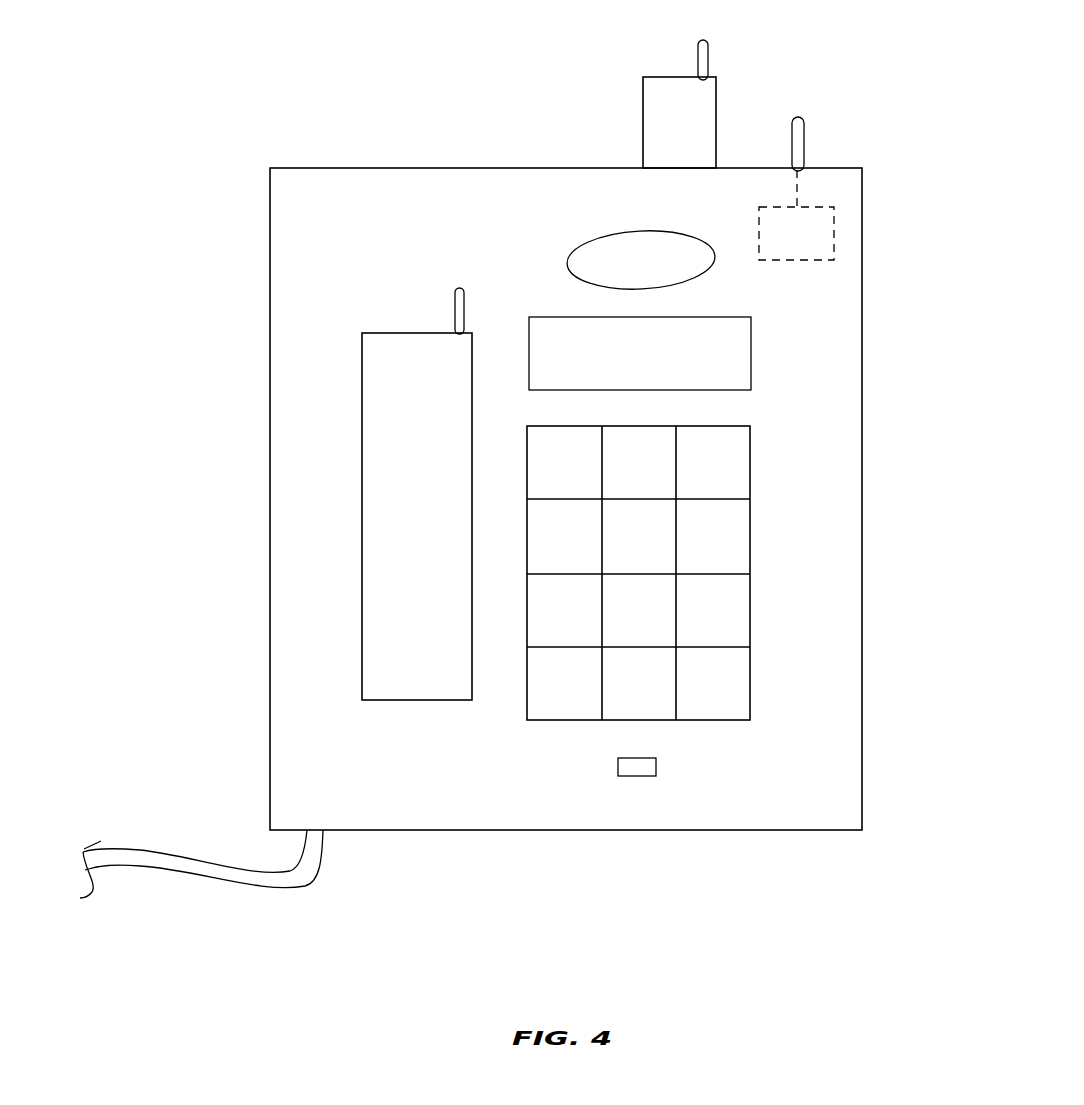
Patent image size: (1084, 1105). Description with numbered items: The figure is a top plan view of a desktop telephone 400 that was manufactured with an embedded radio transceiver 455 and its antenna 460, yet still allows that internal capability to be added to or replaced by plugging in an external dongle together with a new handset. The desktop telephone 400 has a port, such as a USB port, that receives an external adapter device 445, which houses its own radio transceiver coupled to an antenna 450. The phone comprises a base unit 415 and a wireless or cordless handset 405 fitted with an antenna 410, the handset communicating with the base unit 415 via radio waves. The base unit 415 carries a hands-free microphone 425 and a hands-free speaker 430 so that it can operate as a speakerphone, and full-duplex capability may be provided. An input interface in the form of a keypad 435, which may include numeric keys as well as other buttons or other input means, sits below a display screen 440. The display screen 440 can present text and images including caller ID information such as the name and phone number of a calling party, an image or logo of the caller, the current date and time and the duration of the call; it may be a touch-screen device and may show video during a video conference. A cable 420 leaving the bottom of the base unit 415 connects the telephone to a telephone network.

The desktop telephone 400 is at (864, 182).
The cordless handset 405 is at (362, 518).
The handset antenna 410 is at (454, 316).
The base unit 415 is at (270, 498).
The cable 420 is at (120, 845).
The hands-free microphone 425 is at (656, 760).
The hands-free speaker 430 is at (566, 262).
The keypad 435 is at (750, 537).
The display screen 440 is at (751, 351).
The external adapter device 445 is at (641, 128).
The adapter antenna 450 is at (698, 70).
The embedded radio transceiver 455 is at (778, 262).
The embedded antenna 460 is at (791, 145).